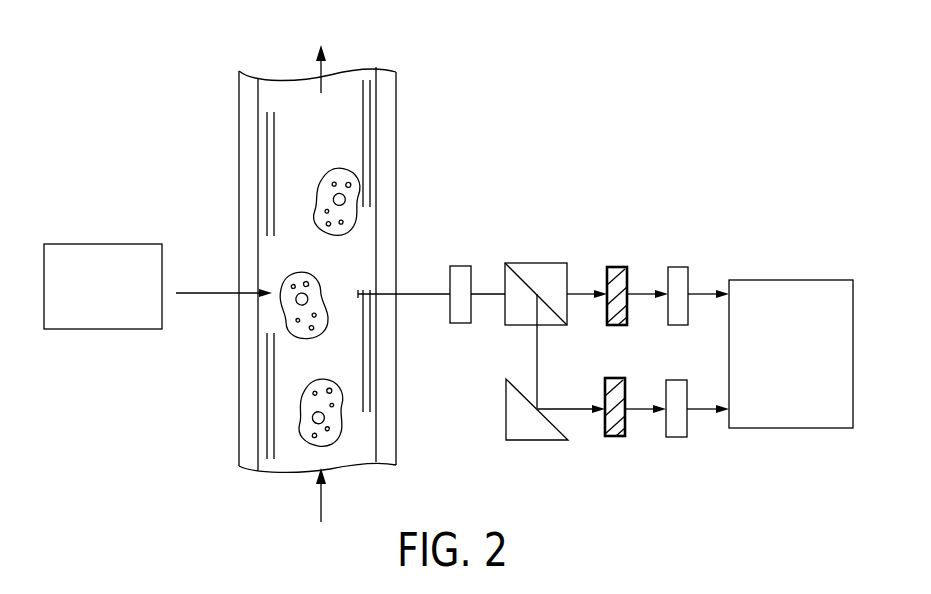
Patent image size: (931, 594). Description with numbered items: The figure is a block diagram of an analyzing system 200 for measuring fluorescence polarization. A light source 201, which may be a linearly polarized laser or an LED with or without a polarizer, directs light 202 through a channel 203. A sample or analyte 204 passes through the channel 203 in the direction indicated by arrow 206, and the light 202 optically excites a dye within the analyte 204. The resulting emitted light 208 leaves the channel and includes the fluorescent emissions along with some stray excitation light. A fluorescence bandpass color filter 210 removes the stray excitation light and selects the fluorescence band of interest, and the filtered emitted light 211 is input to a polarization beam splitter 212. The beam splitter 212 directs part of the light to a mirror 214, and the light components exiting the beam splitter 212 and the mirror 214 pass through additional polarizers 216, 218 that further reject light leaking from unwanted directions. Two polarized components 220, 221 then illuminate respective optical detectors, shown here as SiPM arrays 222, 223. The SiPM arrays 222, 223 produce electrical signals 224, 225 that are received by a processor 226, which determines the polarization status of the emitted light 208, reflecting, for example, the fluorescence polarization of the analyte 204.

The analyzing system 200 is at (748, 86).
The light source 201 is at (102, 244).
The light 202 is at (205, 292).
The channel 203 is at (248, 73).
The sample/analyte 204 is at (288, 313).
The arrow 206 is at (318, 504).
The emitted light 208 is at (412, 293).
The fluorescence bandpass color filter 210 is at (460, 265).
The filtered emitted light 211 is at (484, 293).
The polarization beam splitter 212 is at (538, 262).
The mirror 214 is at (506, 410).
The polarizer 216 is at (608, 267).
The polarizer 218 is at (616, 437).
The polarized component 220 is at (633, 293).
The polarized component 221 is at (632, 410).
The SiPM array 222 is at (678, 265).
The SiPM array 223 is at (677, 438).
The electrical signal 224 is at (697, 292).
The electrical signal 225 is at (697, 412).
The processor 226 is at (793, 279).